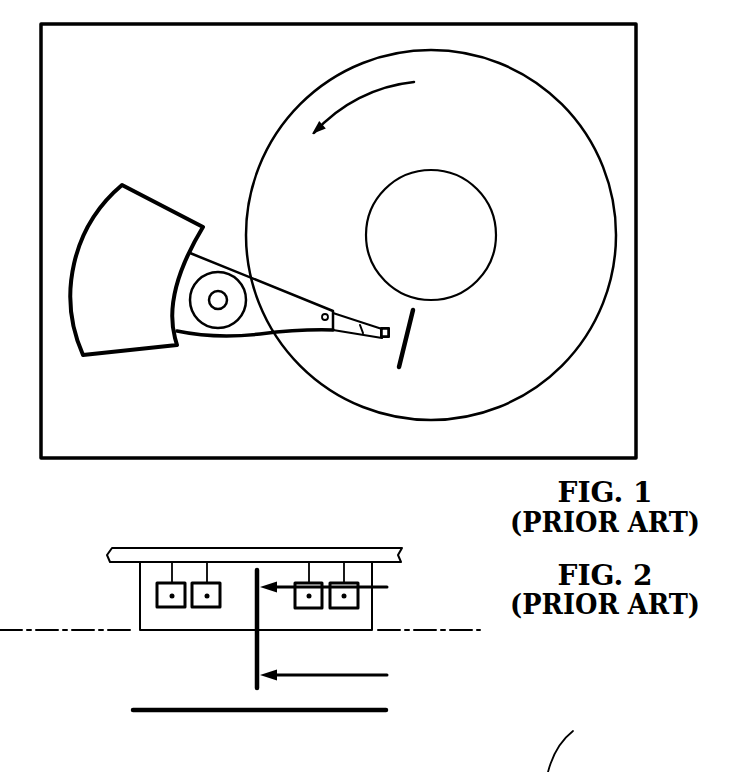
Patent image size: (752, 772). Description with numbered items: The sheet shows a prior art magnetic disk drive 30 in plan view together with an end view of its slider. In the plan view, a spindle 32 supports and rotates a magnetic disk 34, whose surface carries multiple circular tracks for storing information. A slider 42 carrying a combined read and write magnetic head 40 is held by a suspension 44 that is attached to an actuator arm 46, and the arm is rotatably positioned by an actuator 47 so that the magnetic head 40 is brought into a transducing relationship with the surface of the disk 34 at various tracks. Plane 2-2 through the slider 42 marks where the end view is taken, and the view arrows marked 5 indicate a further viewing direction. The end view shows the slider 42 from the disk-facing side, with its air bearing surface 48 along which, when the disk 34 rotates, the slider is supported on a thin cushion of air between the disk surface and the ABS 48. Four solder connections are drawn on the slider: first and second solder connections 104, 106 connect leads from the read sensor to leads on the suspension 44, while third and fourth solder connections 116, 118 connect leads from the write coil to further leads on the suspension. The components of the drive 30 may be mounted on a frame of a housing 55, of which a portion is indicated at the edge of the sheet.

In FIG. 1, the magnetic disk drive 30 is at (660, 29).
In FIG. 1, the spindle 32 is at (452, 172).
In FIG. 1, the magnetic disk 34 is at (548, 237).
In FIG. 1, the magnetic head 40 is at (386, 338).
In FIG. 2, the magnetic head 40 is at (260, 592).
In FIG. 1, the slider 42 is at (388, 322).
In FIG. 2, the slider 42 is at (140, 594).
In FIG. 1, the suspension 44 is at (345, 334).
In FIG. 1, the actuator arm 46 is at (262, 277).
In FIG. 1, the actuator 47 is at (157, 200).
In FIG. 2, the air bearing surface 48 is at (32, 632).
In FIG. 2, the first solder connection 104 is at (158, 584).
In FIG. 2, the second solder connection 106 is at (323, 585).
In FIG. 2, the third solder connection 116 is at (191, 592).
In FIG. 2, the fourth solder connection 118 is at (294, 585).
In FIG. 1, the plane 2- 2 is at (424, 320).
In FIG. 2, the view line for FIG. 5 is at (158, 722).
In FIG. 2, the housing 55 is at (577, 743).